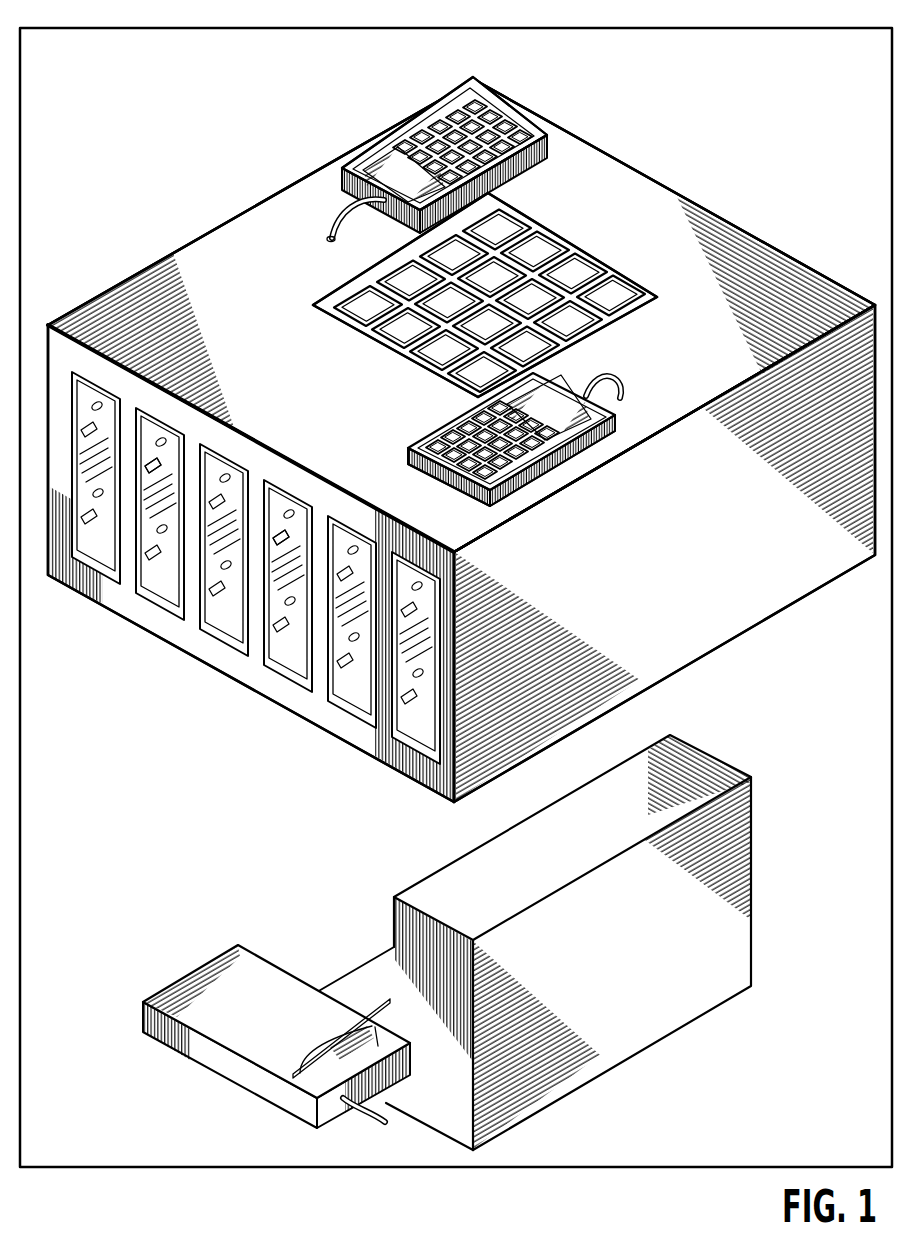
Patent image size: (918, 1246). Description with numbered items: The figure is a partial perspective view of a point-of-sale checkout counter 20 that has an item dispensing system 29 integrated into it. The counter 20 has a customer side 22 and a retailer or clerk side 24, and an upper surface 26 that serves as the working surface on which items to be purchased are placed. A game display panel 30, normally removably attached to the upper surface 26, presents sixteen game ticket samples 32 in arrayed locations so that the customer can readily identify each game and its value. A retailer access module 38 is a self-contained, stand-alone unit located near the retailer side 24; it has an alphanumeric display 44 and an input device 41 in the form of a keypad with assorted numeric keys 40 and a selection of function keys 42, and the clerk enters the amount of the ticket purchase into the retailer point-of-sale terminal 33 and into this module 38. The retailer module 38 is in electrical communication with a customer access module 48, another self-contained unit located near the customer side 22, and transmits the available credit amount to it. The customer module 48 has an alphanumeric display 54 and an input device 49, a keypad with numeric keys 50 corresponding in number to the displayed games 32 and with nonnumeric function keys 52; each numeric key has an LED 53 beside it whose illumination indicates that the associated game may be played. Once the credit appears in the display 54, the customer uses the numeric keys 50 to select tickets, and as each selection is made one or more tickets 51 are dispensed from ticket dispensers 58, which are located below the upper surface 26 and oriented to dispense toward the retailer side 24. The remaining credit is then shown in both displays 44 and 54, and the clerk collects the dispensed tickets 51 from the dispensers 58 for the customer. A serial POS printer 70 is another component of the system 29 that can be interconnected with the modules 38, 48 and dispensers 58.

The counter 20 is at (669, 185).
The customer side 22 is at (771, 246).
The retailer side 24 is at (142, 613).
The upper surface 26 is at (302, 345).
The item dispensing system 29 is at (213, 178).
The game display panel 30 is at (607, 257).
The game ticket samples 32 is at (531, 222).
The retailer point-of-sale terminal 33 is at (635, 933).
The retailer access module 38 is at (413, 435).
The numeric keys 40 is at (467, 423).
The input device 41 is at (577, 467).
The function keys 42 is at (443, 461).
The alphanumeric display 44 is at (548, 397).
The customer access module 48 is at (413, 125).
The input device 49 is at (489, 111).
The numeric keys 50 is at (452, 113).
The tickets 51 is at (160, 463).
The nonnumeric function keys 52 is at (477, 188).
The LED 53 is at (394, 151).
The alphanumeric display 54 is at (370, 150).
The ticket dispensers 58 is at (110, 549).
The serial POS printer 70 is at (268, 1016).